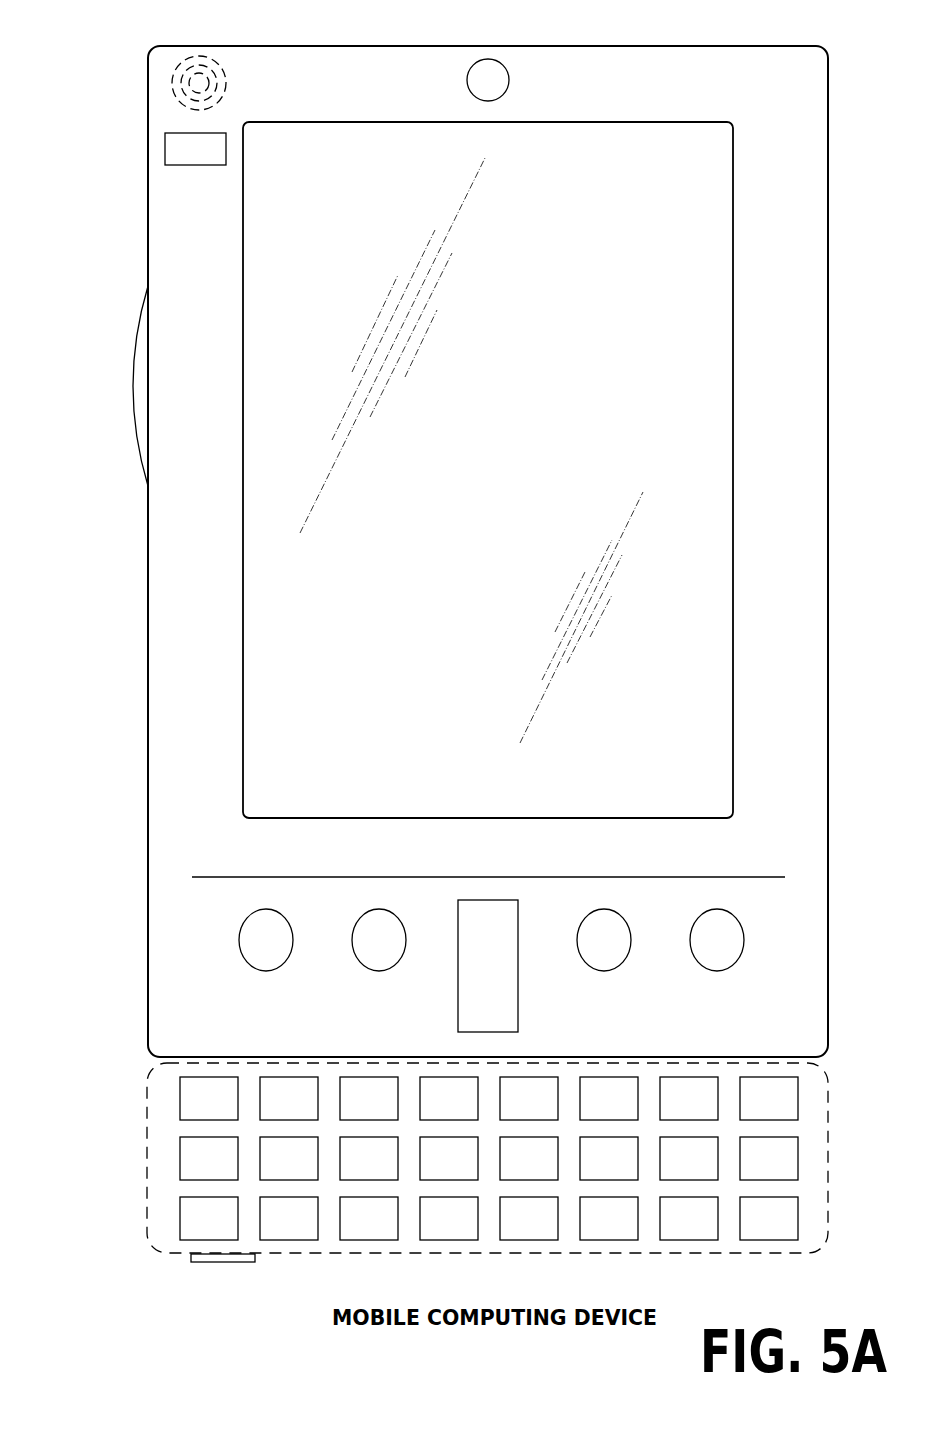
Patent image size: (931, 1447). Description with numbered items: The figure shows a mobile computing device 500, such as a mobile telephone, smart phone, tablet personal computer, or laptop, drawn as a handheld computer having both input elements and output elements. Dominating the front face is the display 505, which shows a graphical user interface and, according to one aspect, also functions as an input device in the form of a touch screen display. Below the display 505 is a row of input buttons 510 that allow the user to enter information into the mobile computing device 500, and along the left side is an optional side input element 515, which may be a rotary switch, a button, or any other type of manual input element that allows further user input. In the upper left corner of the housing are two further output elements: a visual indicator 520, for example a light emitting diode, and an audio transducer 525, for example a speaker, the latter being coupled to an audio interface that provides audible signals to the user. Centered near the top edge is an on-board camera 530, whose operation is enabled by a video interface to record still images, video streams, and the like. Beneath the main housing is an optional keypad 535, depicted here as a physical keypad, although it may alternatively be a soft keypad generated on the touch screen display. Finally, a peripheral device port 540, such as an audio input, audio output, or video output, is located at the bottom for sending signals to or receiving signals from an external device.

The mobile computing device 500 is at (790, 44).
The display 505 is at (267, 649).
The input buttons 510 is at (270, 970).
The side input element 515 is at (125, 385).
The visual indicator 520 is at (165, 150).
The audio transducer 525 is at (170, 86).
The on-board camera 530 is at (488, 59).
The keypad 535 is at (158, 1158).
The peripheral device port 540 is at (194, 1264).